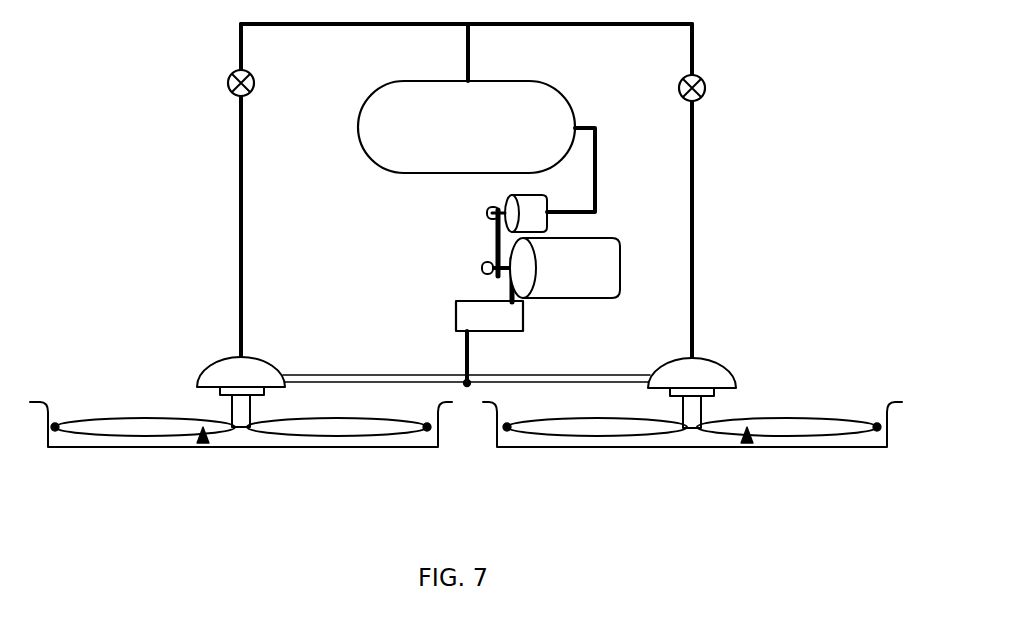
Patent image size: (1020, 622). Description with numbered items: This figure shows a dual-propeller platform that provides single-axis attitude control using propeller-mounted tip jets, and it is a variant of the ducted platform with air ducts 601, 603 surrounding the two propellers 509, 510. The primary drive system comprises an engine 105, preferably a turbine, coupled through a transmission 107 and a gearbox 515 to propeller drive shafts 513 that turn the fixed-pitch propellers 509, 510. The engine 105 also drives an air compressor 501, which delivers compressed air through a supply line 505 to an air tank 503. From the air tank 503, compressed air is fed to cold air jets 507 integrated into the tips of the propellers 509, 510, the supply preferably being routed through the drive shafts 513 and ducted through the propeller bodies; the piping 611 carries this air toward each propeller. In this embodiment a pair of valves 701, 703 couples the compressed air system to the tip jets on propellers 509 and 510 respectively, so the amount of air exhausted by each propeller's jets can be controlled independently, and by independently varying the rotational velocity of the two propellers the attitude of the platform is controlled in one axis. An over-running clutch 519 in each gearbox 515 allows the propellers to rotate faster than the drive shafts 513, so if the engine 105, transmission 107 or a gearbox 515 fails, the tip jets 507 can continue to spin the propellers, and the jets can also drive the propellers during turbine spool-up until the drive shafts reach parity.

The engine 105 is at (567, 268).
The transmission 107 is at (456, 317).
The air compressor 501 is at (512, 199).
The air tank 503 is at (466, 127).
The supply line 505 is at (597, 189).
The cold air jets 507 is at (55, 430).
The propeller 509 is at (203, 445).
The propeller 510 is at (747, 445).
The propeller drive shafts 513 is at (232, 405).
The gearbox 515 is at (215, 366).
The over-running clutch 519 is at (288, 386).
The air duct 601 is at (390, 451).
The air duct 603 is at (557, 451).
The fluid conduit 611 is at (241, 293).
The valve 701 is at (228, 82).
The valve 703 is at (705, 88).